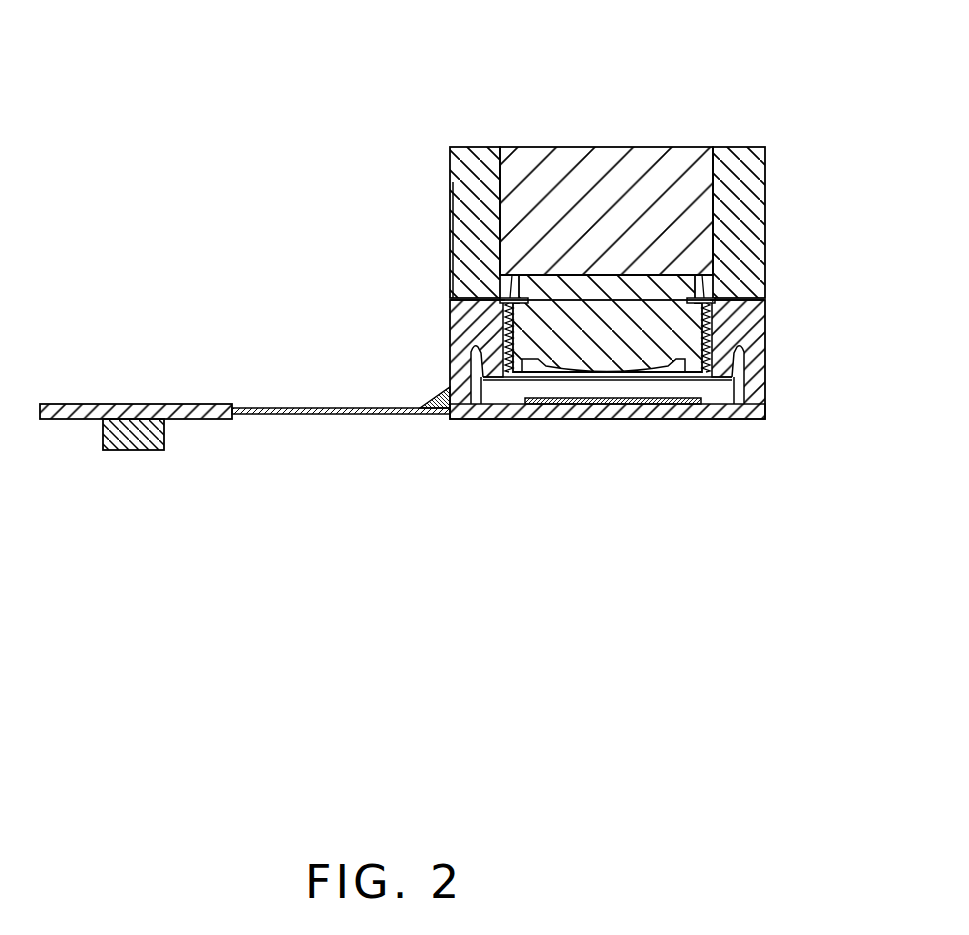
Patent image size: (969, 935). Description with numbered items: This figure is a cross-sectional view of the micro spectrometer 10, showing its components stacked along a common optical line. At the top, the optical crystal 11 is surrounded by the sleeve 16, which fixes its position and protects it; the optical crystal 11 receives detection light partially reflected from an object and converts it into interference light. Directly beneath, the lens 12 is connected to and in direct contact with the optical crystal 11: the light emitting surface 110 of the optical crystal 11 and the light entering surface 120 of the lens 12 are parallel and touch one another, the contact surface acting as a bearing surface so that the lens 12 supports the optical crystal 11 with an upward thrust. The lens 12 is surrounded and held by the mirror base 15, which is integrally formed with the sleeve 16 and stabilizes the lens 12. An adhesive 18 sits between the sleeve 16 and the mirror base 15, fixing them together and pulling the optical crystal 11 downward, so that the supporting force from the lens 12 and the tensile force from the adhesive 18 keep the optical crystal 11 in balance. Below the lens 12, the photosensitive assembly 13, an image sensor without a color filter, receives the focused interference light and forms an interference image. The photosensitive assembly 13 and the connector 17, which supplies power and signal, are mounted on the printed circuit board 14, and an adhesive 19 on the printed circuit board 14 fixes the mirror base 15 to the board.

The micro spectrometer 10 is at (428, 42).
The optical crystal 11 is at (603, 167).
The light emitting surface 110 is at (650, 271).
The lens 12 is at (612, 340).
The light entering surface 120 is at (650, 300).
The photosensitive assembly 13 is at (555, 403).
The printed circuit board 14 is at (327, 410).
The mirror base 15 is at (478, 352).
The sleeve 16 is at (472, 220).
The connector 17 is at (137, 435).
The adhesive 18 is at (505, 297).
The adhesive 19 is at (434, 405).